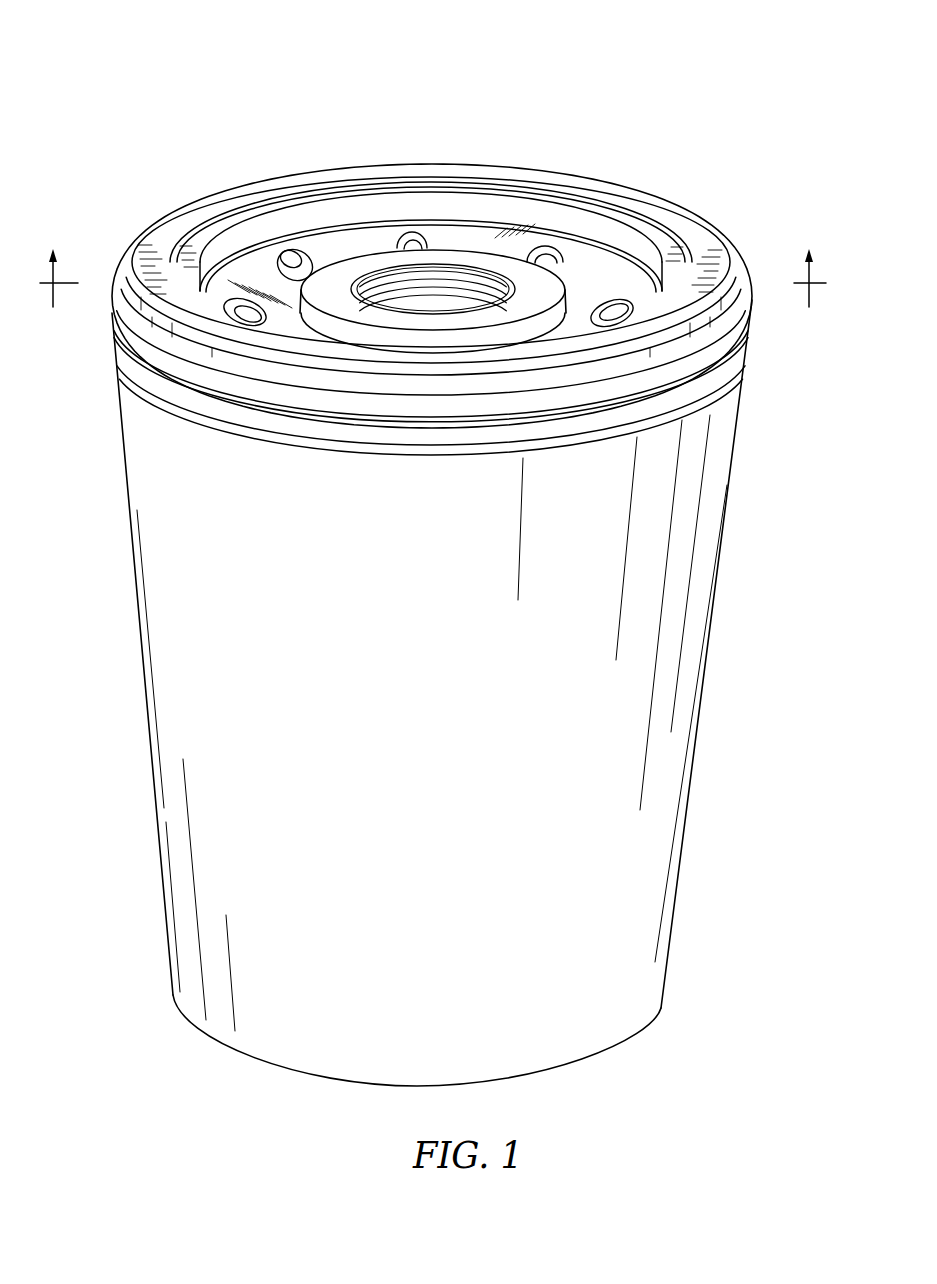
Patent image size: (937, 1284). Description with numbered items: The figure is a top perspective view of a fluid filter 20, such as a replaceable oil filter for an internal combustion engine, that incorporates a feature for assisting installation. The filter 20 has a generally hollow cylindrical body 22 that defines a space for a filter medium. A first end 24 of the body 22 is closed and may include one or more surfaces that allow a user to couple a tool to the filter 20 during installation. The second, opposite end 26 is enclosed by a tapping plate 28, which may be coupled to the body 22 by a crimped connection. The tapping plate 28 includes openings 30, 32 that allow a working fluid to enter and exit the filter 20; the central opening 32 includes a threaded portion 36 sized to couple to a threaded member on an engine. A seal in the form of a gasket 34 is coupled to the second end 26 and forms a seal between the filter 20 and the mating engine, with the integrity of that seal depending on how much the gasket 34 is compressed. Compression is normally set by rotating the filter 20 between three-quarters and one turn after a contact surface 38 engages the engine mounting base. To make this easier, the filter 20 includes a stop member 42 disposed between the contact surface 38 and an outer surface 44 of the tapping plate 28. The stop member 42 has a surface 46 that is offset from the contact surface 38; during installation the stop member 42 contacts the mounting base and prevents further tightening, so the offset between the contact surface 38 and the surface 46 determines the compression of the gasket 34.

The fluid filter 20 is at (128, 114).
The body 22 is at (704, 540).
The first end 24 is at (332, 1080).
The second end 26 is at (712, 380).
The tapping plate 28 is at (357, 236).
The openings 30 is at (291, 262).
The opening 32 is at (443, 266).
The gasket 34 is at (566, 181).
The threaded portion 36 is at (474, 272).
The contact surface 38 is at (161, 240).
The stop member 42 is at (607, 237).
The outer surface 44 is at (570, 291).
The surface 46 is at (661, 241).